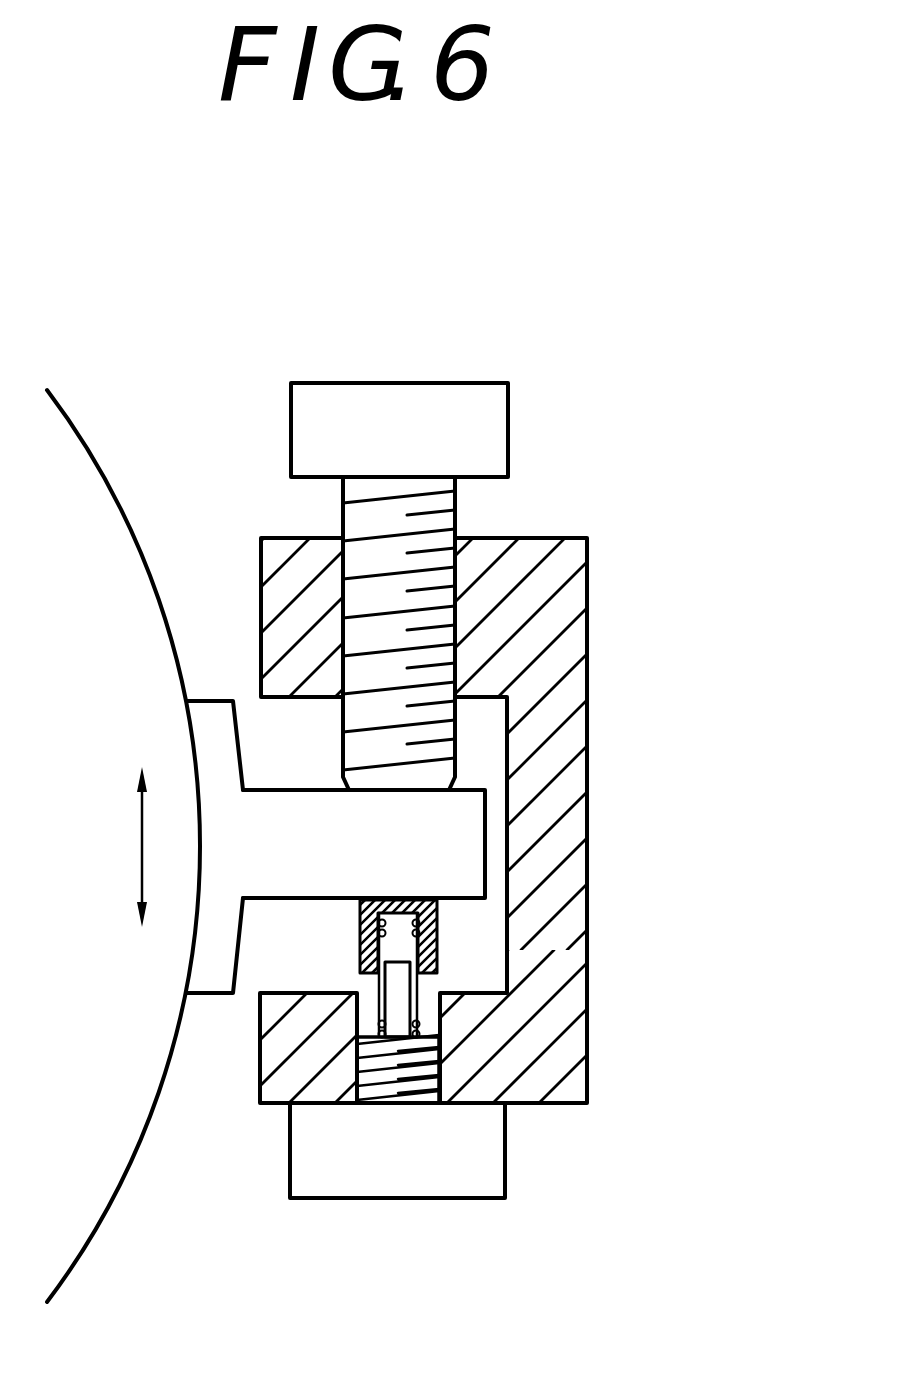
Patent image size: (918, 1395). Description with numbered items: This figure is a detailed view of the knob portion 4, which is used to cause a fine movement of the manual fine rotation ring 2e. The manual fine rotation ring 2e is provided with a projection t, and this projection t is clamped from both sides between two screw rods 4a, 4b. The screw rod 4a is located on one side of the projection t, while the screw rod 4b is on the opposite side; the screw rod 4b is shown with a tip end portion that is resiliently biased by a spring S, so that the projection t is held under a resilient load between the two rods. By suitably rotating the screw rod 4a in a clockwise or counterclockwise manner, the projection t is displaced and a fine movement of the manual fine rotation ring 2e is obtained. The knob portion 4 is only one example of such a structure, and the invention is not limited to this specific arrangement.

The manual fine rotation ring 2e is at (78, 477).
The knob portion 4 is at (592, 556).
The screw rod 4a is at (417, 383).
The screw rod 4b is at (442, 1175).
The projection t is at (415, 848).
The spring S is at (415, 985).